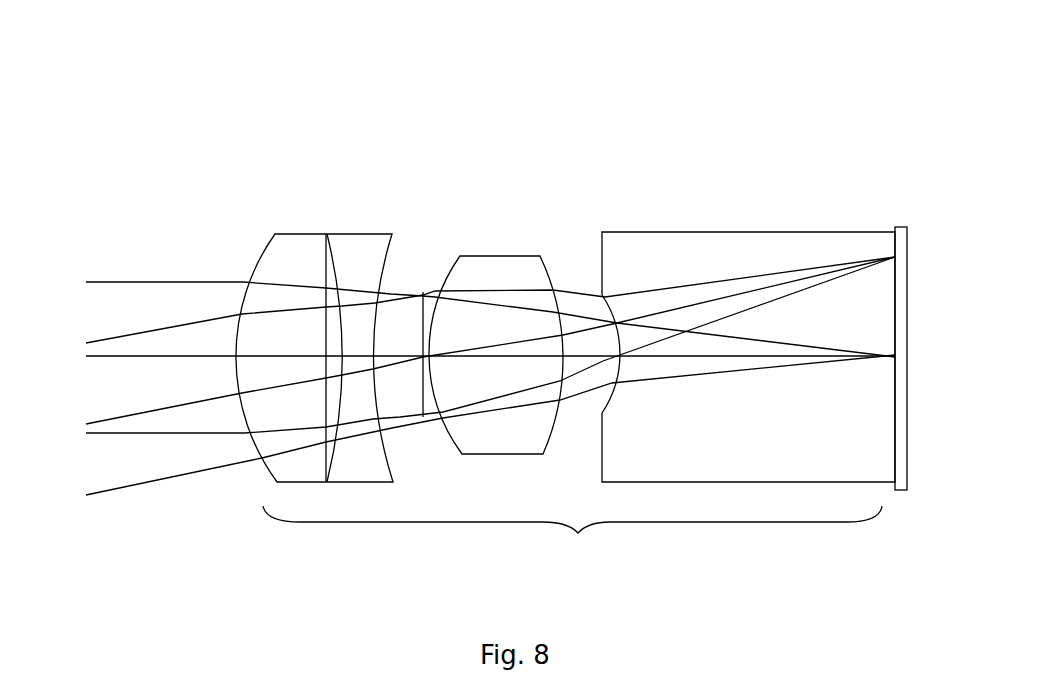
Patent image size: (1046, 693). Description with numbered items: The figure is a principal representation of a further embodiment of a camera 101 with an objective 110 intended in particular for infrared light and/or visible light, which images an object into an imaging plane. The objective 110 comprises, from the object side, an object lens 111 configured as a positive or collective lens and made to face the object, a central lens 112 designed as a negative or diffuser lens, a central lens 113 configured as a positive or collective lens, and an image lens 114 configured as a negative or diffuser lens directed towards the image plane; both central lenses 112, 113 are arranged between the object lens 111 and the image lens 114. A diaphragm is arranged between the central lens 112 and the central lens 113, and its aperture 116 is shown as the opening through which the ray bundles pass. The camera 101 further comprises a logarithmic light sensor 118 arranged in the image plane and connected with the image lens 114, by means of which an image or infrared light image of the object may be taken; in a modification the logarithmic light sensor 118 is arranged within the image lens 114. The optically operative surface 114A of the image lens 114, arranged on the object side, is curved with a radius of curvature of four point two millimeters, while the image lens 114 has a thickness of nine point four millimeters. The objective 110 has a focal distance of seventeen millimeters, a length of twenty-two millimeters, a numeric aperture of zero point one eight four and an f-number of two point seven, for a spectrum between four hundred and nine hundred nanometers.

The camera 101 is at (768, 83).
The objective 110 is at (585, 537).
The object lens 111 is at (295, 255).
The central lens 112 is at (356, 253).
The central lens 113 is at (505, 258).
The image lens 114 is at (748, 300).
The optically operative surface 114A is at (617, 323).
The aperture of the diaphragm 116 is at (423, 322).
The logarithmic light sensor 118 is at (900, 232).